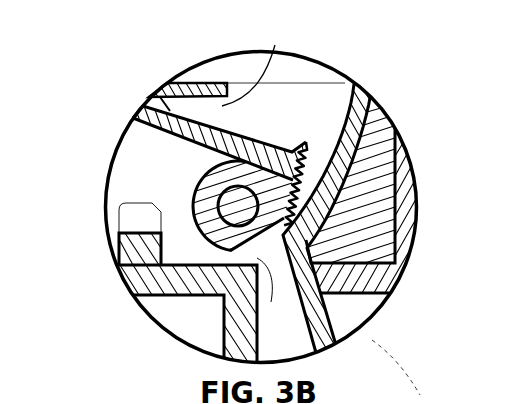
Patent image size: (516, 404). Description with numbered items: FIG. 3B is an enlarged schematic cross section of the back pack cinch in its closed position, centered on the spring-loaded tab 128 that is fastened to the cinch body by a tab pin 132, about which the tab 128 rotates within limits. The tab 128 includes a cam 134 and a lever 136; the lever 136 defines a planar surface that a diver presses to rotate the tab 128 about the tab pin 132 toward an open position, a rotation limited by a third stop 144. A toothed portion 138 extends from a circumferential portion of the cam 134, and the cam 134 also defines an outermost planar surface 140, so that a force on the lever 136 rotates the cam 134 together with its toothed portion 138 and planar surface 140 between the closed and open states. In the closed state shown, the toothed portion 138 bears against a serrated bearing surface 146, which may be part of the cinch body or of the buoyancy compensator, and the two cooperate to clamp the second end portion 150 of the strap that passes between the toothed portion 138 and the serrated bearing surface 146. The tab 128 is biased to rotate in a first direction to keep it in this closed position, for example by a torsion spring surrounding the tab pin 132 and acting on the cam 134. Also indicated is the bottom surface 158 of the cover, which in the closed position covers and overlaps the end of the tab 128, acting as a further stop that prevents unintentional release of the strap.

The tab 128 is at (320, 98).
The tab pin 132 is at (236, 208).
The cam 134 is at (203, 193).
The lever 136 is at (158, 93).
The toothed portion 138 is at (312, 150).
The outermost planar surface 140 is at (225, 313).
The third stop 144 is at (136, 240).
The serrated bearing surface 146 is at (305, 258).
The second end portion 150 is at (363, 97).
The bottom surface 158 is at (256, 58).